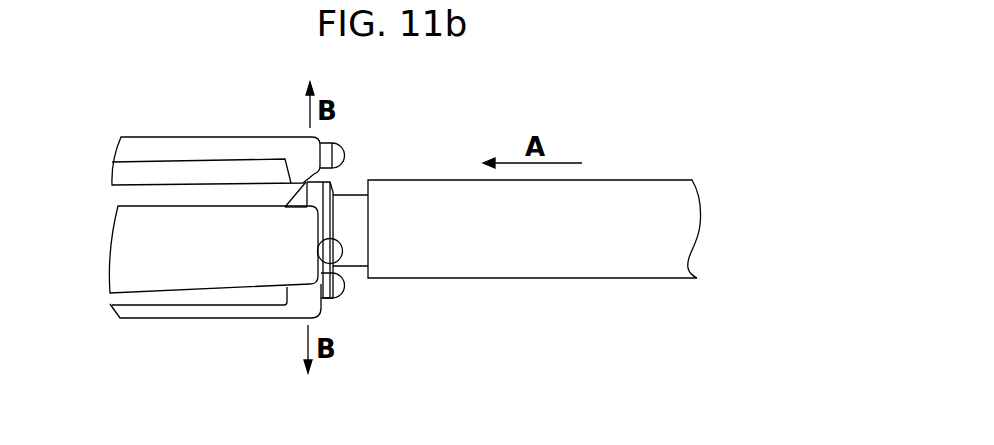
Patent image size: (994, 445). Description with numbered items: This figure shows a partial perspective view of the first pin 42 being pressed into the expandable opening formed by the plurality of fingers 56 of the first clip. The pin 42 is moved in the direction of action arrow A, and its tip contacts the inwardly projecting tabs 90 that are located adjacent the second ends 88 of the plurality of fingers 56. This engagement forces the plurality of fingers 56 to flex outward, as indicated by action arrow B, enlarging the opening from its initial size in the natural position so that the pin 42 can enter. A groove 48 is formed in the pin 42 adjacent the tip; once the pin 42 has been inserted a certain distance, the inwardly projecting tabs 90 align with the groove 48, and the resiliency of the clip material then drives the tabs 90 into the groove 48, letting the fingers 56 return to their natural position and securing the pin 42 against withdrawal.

The first pin 42 is at (533, 242).
The groove 48 is at (353, 195).
The plurality of fingers 56 is at (172, 137).
The second ends 88 is at (295, 137).
The inwardly projecting tabs 90 is at (298, 183).